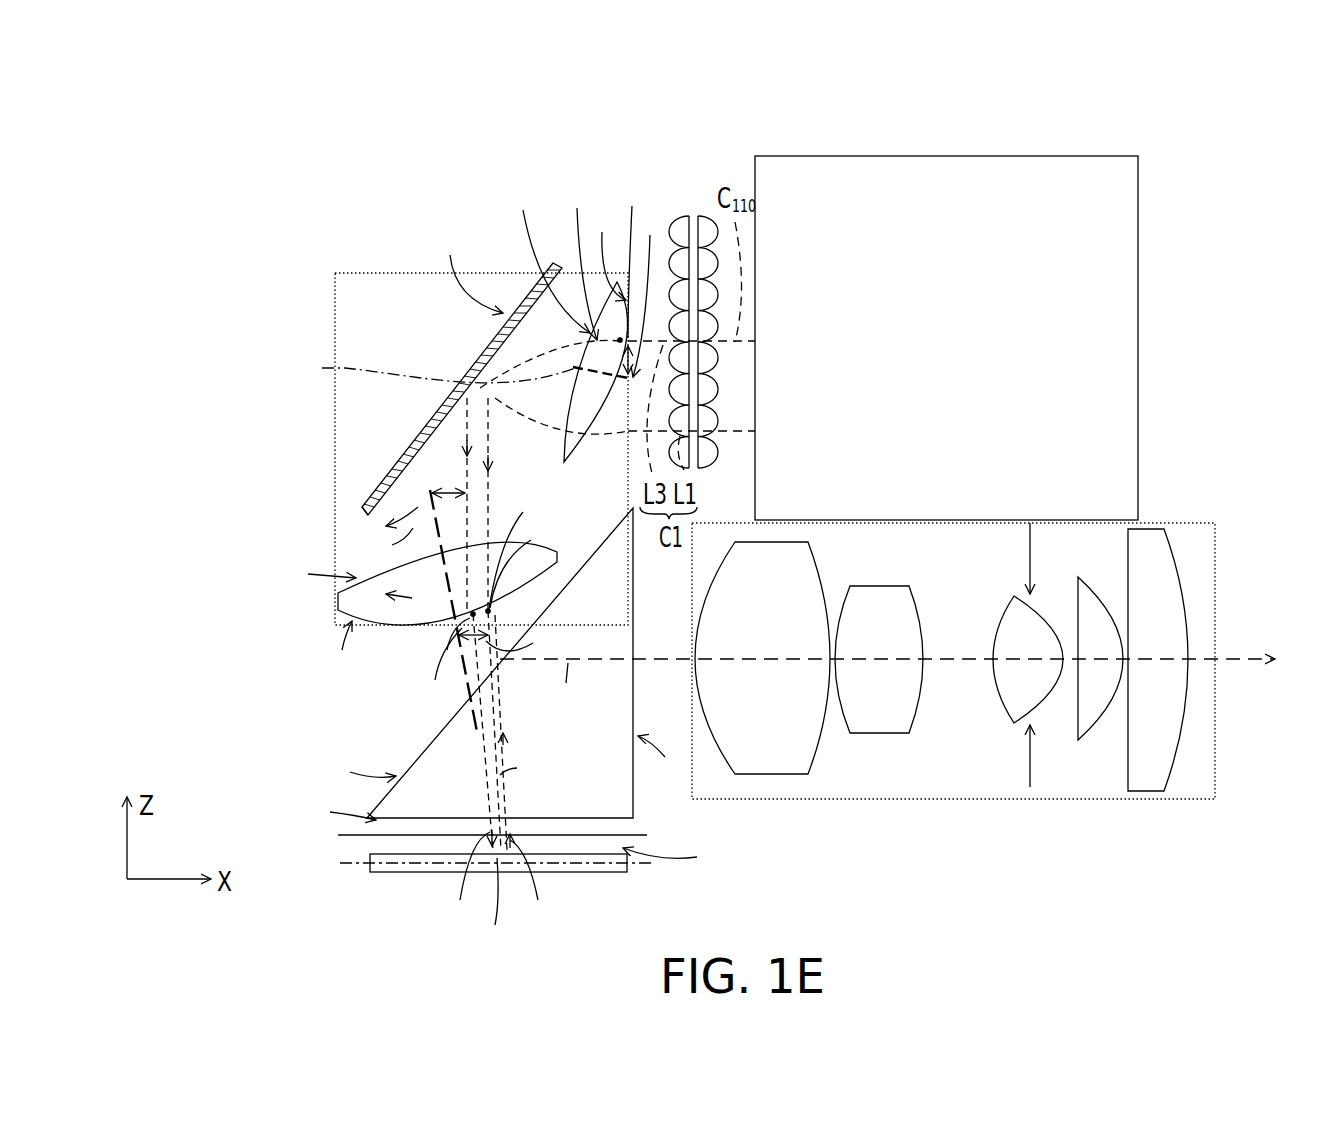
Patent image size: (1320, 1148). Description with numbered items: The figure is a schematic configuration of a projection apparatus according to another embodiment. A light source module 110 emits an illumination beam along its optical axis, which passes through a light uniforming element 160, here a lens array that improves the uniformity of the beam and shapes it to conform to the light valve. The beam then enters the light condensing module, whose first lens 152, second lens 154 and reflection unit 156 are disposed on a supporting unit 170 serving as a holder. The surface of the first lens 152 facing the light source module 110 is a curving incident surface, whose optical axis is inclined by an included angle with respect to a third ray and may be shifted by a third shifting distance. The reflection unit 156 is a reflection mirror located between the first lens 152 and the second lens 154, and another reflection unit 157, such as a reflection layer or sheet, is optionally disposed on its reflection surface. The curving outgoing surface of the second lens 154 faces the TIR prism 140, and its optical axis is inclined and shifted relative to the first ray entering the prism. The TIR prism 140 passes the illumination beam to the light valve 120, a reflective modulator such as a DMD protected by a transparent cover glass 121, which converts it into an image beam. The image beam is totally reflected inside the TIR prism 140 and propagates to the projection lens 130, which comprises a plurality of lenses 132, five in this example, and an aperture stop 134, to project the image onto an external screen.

The light source module 110 is at (1138, 352).
The light valve 120 is at (625, 868).
The transparent cover glass 121 is at (648, 835).
The projection lens 130 is at (953, 715).
The lenses 132 is at (787, 757).
The aperture stop 134 is at (1030, 787).
The TIR prism 140 is at (397, 822).
The first lens 152 is at (610, 320).
The second lens 154 is at (400, 625).
The reflection unit 156 is at (518, 317).
The reflection unit 157 is at (385, 512).
The light uniforming element 160 is at (698, 212).
The supporting unit 170 is at (335, 313).